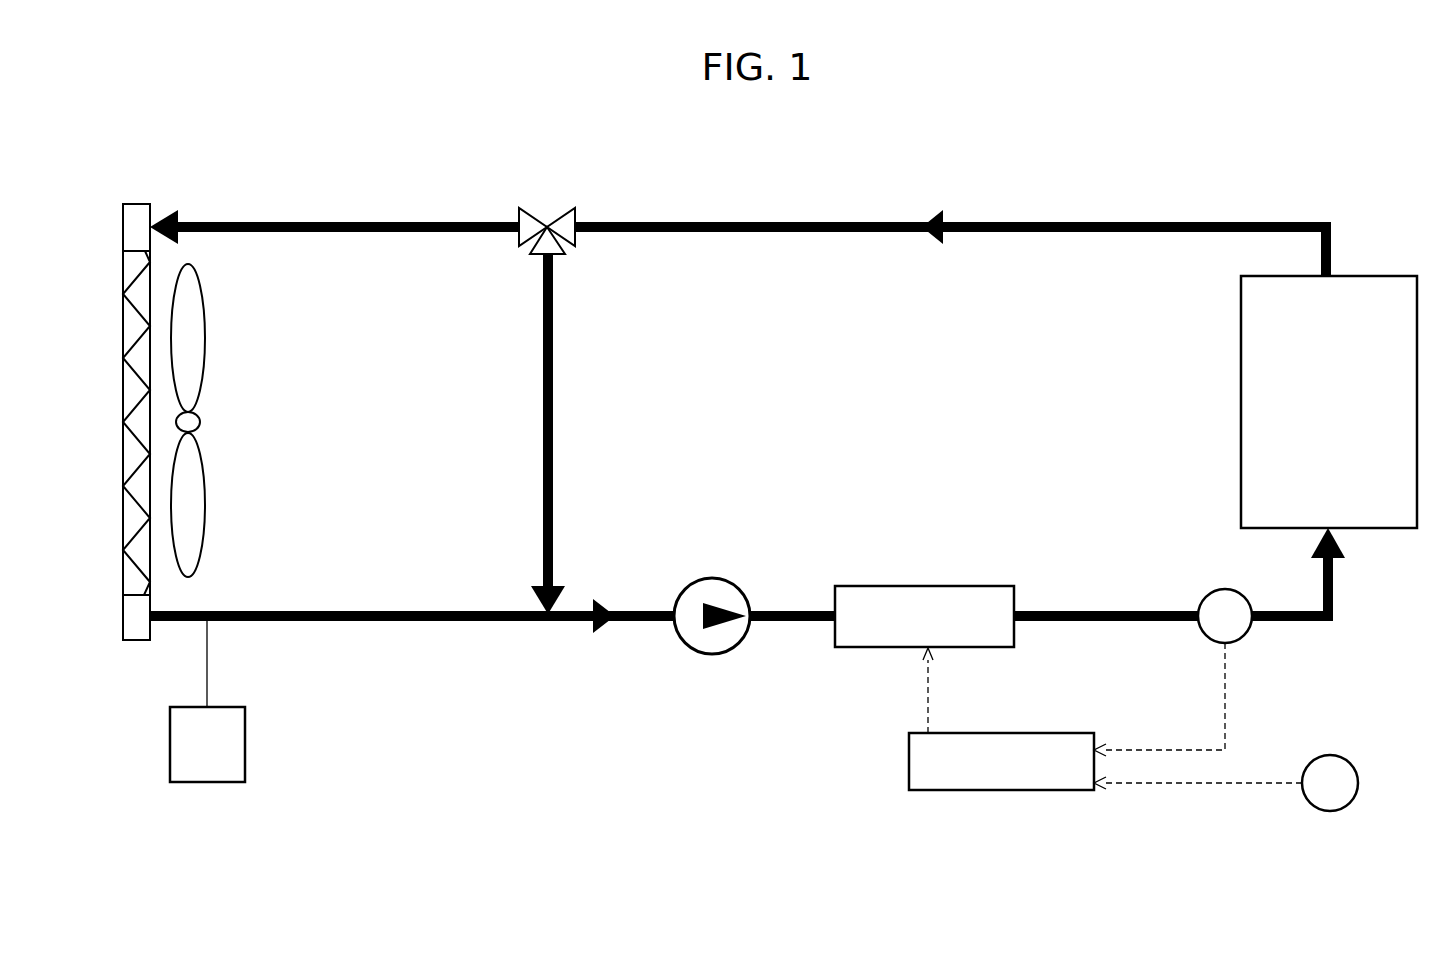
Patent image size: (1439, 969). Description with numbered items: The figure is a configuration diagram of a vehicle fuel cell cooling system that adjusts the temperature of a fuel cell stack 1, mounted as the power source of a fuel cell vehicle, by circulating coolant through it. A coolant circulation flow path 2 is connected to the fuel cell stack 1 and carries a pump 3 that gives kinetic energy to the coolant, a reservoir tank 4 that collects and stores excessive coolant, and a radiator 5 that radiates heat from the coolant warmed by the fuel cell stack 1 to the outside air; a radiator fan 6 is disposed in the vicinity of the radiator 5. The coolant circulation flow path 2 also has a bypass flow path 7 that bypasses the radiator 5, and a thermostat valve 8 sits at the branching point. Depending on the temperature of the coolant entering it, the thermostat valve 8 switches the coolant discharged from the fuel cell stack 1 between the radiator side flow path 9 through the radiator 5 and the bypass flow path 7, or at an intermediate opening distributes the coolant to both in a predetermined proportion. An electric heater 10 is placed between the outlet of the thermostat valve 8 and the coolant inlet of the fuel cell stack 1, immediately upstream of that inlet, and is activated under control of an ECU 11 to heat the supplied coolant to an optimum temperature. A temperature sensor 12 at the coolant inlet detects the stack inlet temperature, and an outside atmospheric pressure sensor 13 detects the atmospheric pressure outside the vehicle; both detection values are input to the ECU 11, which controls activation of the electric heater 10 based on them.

The fuel cell stack 1 is at (1375, 276).
The coolant circulation flow path 2 is at (1019, 223).
The pump 3 is at (712, 578).
The reservoir tank 4 is at (245, 740).
The radiator 5 is at (123, 272).
The radiator fan 6 is at (205, 318).
The bypass flow path 7 is at (553, 378).
The thermostat valve 8 is at (546, 213).
The radiator side flow path 9 is at (376, 222).
The electric heater 10 is at (968, 585).
The ECU 11 is at (1051, 733).
The temperature sensor 12 is at (1208, 589).
The outside atmospheric pressure sensor 13 is at (1328, 756).